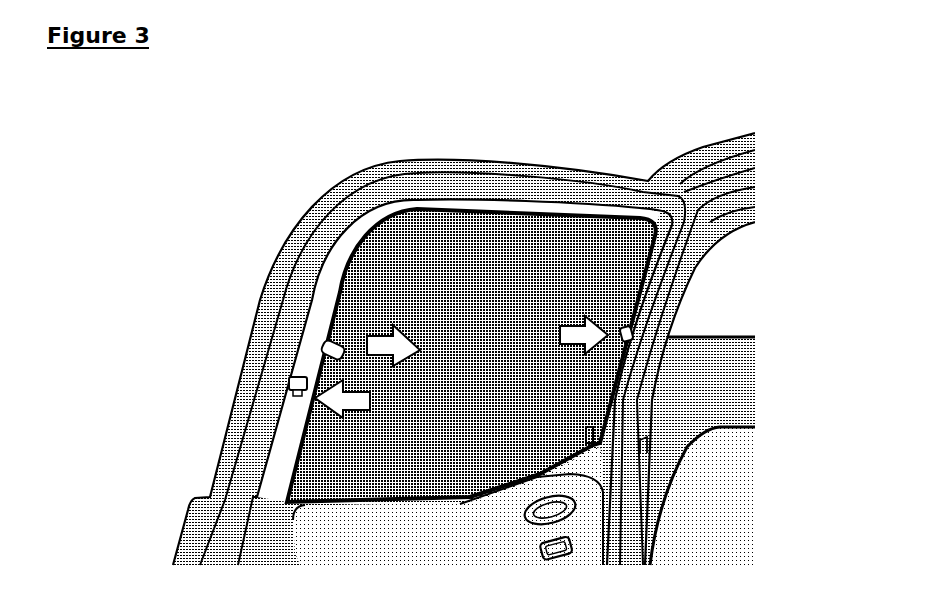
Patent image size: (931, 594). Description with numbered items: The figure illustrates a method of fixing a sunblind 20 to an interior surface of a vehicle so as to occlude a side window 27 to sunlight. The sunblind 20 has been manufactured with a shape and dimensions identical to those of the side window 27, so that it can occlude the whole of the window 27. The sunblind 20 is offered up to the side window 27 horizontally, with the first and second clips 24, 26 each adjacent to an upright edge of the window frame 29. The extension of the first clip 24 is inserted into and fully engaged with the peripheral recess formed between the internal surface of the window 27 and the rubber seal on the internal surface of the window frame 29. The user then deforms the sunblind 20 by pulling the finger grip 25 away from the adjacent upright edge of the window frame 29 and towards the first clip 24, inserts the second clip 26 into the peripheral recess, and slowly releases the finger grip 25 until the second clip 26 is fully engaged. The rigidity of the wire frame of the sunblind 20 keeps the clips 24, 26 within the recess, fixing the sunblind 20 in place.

The sunblind 20 is at (454, 243).
The first clip 24 is at (628, 330).
The finger grip 25 is at (322, 343).
The second clip 26 is at (289, 382).
The side window 27 is at (343, 255).
The window frame 29 is at (247, 450).